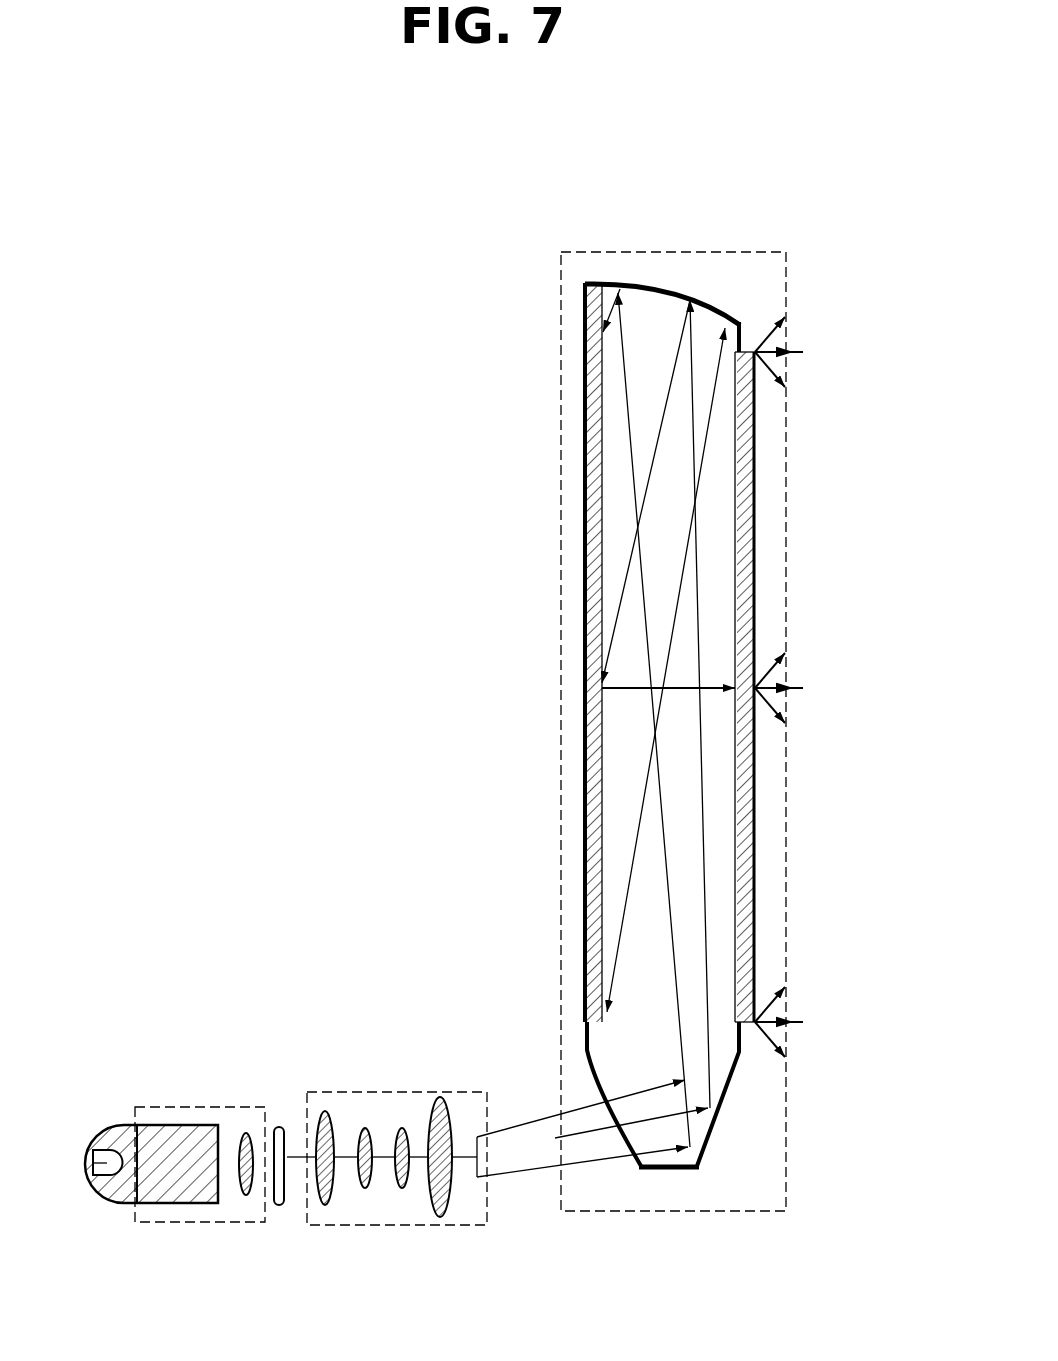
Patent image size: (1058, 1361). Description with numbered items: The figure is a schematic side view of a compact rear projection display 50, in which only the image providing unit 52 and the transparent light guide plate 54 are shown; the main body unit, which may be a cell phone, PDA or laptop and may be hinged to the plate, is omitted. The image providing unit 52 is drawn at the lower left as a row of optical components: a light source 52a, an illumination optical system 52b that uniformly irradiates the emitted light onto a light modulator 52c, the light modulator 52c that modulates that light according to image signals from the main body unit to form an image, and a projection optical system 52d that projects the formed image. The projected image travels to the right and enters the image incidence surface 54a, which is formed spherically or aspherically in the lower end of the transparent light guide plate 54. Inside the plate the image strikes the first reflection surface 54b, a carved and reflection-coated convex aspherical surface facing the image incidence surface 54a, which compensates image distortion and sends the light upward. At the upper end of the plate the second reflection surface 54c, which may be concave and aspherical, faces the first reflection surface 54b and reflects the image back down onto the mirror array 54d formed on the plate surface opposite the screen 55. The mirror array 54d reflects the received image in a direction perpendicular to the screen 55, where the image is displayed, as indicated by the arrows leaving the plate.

The compact rear projection display 50 is at (424, 1317).
The image providing unit 52 is at (397, 998).
The light source 52a is at (112, 1125).
The illumination optical system 52b is at (212, 1107).
The light modulator 52c is at (283, 1125).
The projection optical system 52d is at (407, 1090).
The transparent light guide plate 54 is at (787, 286).
The image incidence surface 54a is at (635, 1143).
The first reflection surface 54b is at (727, 1080).
The second reflection surface 54c is at (686, 290).
The mirror array 54d is at (585, 512).
The screen 55 is at (745, 470).